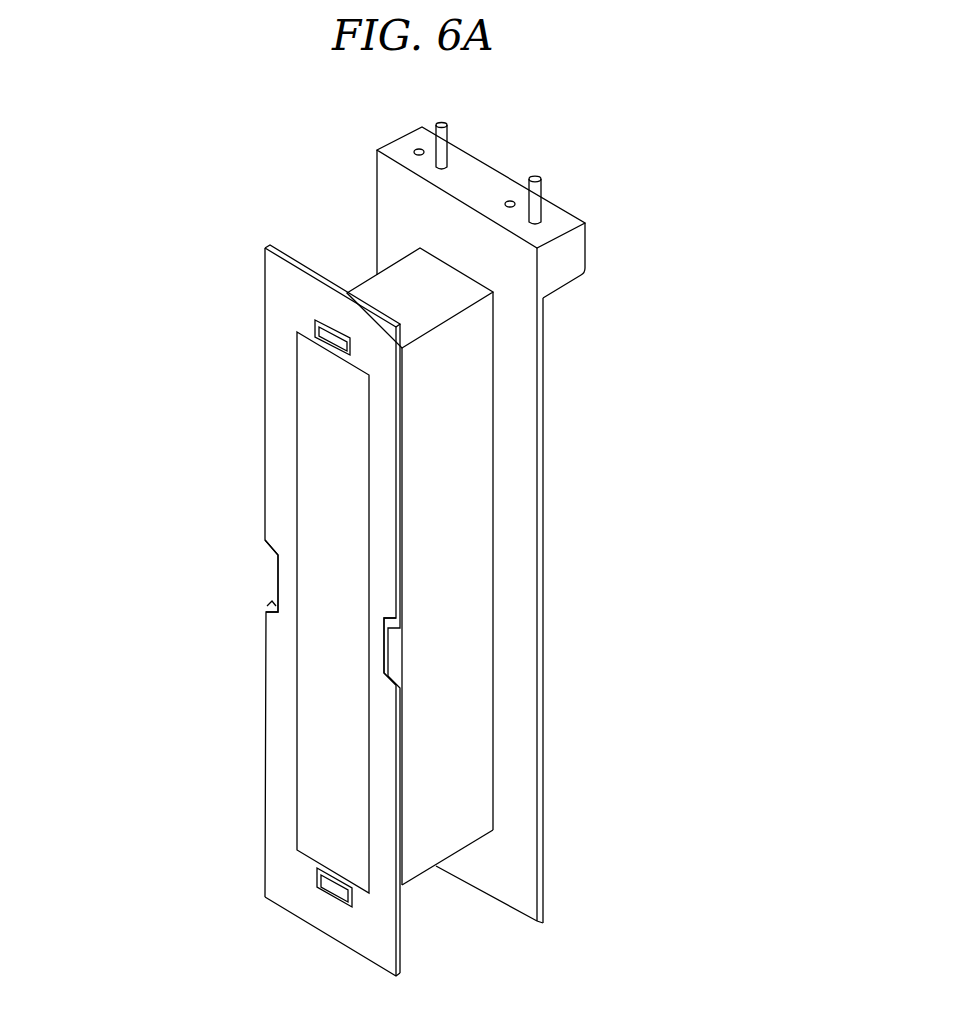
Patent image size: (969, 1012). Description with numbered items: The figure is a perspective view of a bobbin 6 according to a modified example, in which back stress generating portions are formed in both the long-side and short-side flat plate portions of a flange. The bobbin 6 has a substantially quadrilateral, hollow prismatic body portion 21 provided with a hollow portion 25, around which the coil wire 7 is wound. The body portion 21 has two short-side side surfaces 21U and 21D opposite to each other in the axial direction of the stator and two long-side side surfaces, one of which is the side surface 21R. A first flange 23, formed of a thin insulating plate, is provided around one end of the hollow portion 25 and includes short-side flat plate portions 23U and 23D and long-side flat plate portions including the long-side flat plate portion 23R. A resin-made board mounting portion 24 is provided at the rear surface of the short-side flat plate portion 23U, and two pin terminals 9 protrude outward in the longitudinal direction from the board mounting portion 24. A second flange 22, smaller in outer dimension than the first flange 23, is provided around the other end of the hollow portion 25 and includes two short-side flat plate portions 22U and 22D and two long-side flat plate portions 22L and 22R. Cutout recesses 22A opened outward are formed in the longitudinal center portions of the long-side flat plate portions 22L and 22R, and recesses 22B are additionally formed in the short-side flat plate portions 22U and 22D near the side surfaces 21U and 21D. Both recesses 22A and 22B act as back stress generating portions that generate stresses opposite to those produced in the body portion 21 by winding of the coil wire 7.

The bobbin 6 is at (213, 188).
The coil wire 7 is at (517, 668).
The pin terminals 9 is at (440, 122).
The body portion 21 is at (365, 264).
The side surface 21U is at (430, 306).
The side surface 21R is at (472, 730).
The side surface 21D is at (333, 843).
The second flange 22 is at (252, 445).
The short-side flat plate portion 22U is at (295, 302).
The recesses 22B is at (318, 343).
The cutout recesses 22A is at (272, 580).
The long-side flat plate portion 22L is at (278, 655).
The long-side flat plate portion 22R is at (380, 775).
The short-side flat plate portion 22D is at (328, 918).
The first flange 23 is at (561, 516).
The short-side flat plate portion 23U is at (392, 177).
The long-side flat plate portion 23R is at (538, 597).
The short-side flat plate portion 23D is at (528, 888).
The board mounting portion 24 is at (585, 191).
The hollow portion 25 is at (346, 591).